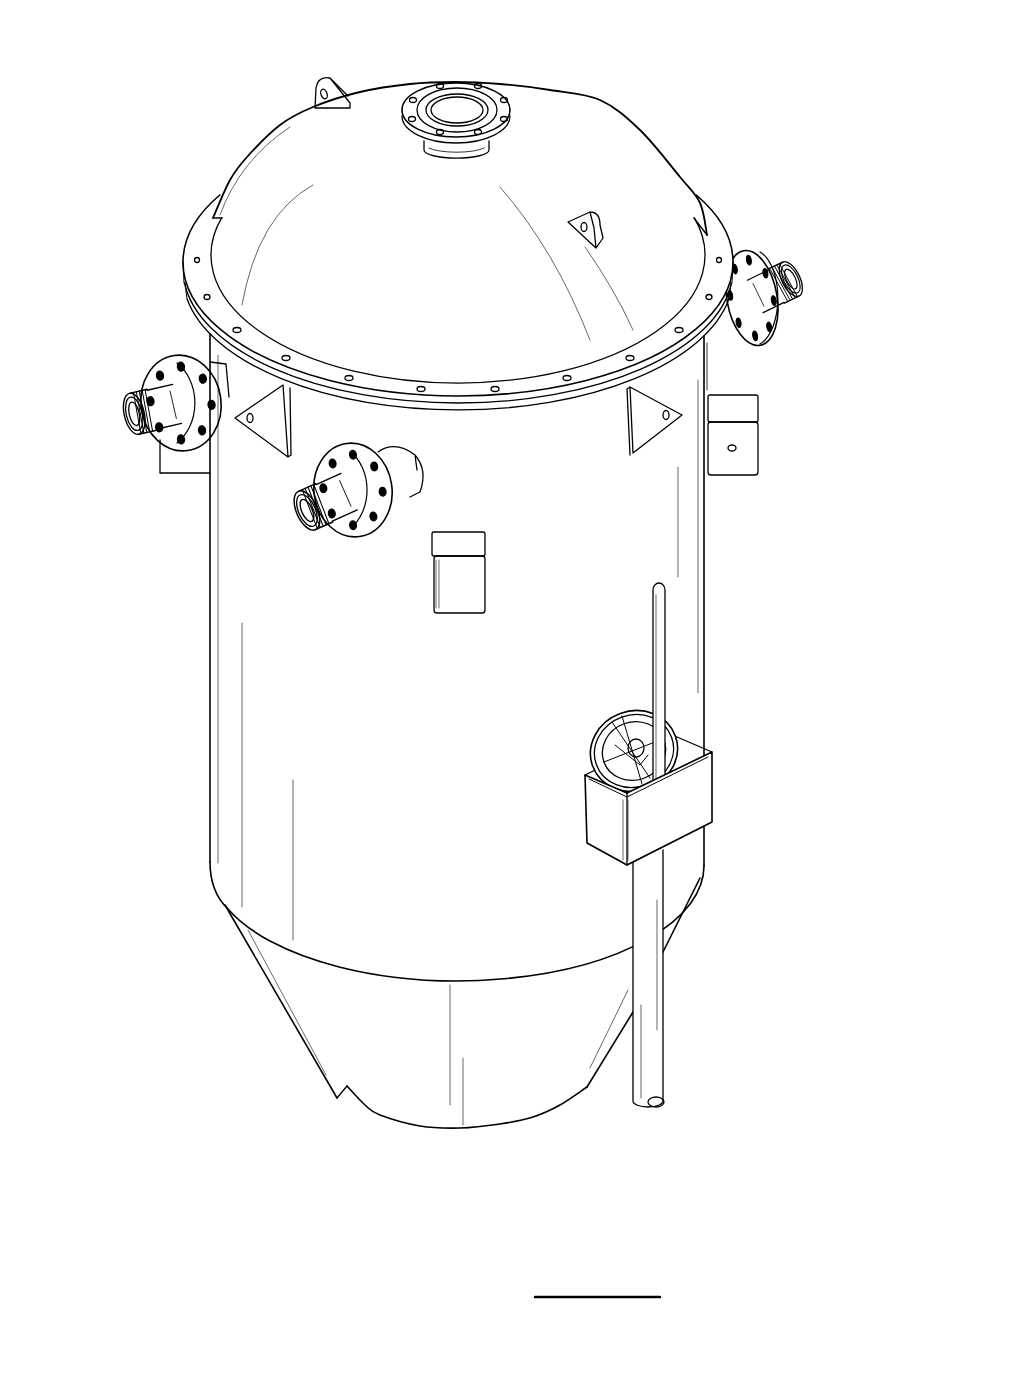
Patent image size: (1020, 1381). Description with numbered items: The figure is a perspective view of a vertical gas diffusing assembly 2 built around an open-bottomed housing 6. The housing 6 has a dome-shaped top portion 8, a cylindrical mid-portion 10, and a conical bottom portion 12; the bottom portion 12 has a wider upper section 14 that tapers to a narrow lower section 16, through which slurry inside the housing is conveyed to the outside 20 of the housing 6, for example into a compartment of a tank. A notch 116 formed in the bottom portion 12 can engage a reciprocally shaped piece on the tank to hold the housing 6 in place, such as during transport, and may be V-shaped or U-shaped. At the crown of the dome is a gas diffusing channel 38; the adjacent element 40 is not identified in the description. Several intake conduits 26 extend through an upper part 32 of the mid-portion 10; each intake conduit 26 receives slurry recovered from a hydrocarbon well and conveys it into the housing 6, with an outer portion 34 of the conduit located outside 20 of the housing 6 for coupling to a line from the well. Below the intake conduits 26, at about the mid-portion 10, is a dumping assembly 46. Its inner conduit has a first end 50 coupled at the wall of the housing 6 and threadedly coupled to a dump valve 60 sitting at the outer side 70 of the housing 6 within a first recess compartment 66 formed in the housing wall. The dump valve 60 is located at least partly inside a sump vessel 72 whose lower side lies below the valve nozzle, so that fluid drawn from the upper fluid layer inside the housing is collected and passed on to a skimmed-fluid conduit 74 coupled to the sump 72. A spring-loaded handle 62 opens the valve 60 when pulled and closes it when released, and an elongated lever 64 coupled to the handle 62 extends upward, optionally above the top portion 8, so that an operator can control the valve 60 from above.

The vertical gas diffusing assembly 2 is at (146, 190).
The open-bottomed housing 6 is at (455, 758).
The top portion 8 is at (600, 150).
The mid-portion 10 is at (240, 650).
The bottom portion 12 is at (445, 1057).
The wider upper section 14 is at (285, 958).
The narrow lower section 16 is at (575, 1095).
The outside of the housing 20 is at (210, 765).
The intake conduit 26 is at (145, 425).
The upper part of the mid-portion 32 is at (706, 383).
The outer portion of an intake conduit 34 is at (355, 535).
The gas diffusing channel 38 is at (457, 95).
The top flange 40 is at (415, 90).
The dumping assembly 46 is at (738, 790).
The first end of the inner conduit 50 is at (630, 715).
The dump valve 60 is at (690, 805).
The spring-loaded handle 62 is at (693, 735).
The elongated lever 64 is at (665, 595).
The first recess compartment 66 is at (635, 735).
The outer side of the housing 70 is at (695, 625).
The sump vessel 72 is at (665, 785).
The skimmed-fluid conduit 74 is at (655, 985).
The notch 116 is at (345, 1100).